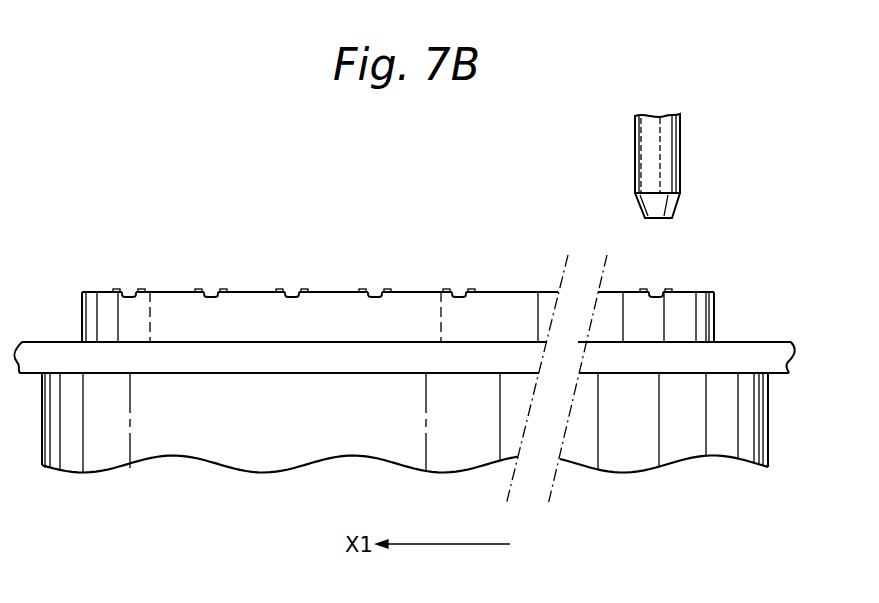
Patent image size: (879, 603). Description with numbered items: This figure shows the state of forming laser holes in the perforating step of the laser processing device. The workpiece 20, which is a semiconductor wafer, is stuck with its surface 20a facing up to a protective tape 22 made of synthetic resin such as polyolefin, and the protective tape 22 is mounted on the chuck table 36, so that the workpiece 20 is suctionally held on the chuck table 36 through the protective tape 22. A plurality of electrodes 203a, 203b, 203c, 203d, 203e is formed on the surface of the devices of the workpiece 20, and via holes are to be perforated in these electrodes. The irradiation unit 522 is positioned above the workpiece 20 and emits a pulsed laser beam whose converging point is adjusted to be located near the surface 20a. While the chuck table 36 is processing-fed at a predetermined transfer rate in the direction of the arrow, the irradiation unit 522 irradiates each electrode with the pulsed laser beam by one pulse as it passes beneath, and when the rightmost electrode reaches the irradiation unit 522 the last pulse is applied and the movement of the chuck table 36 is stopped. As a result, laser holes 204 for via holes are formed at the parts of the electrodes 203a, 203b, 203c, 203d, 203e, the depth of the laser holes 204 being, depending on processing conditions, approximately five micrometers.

The workpiece 20 is at (409, 247).
The surface 20a is at (618, 291).
The protective tape 22 is at (748, 355).
The chuck table 36 is at (753, 423).
The electrode 203a is at (141, 289).
The electrode 203b is at (223, 289).
The electrode 203c is at (304, 289).
The electrode 203d is at (387, 289).
The electrode 203e is at (471, 289).
The laser hole 204 is at (127, 290).
The irradiation unit 522 is at (682, 140).